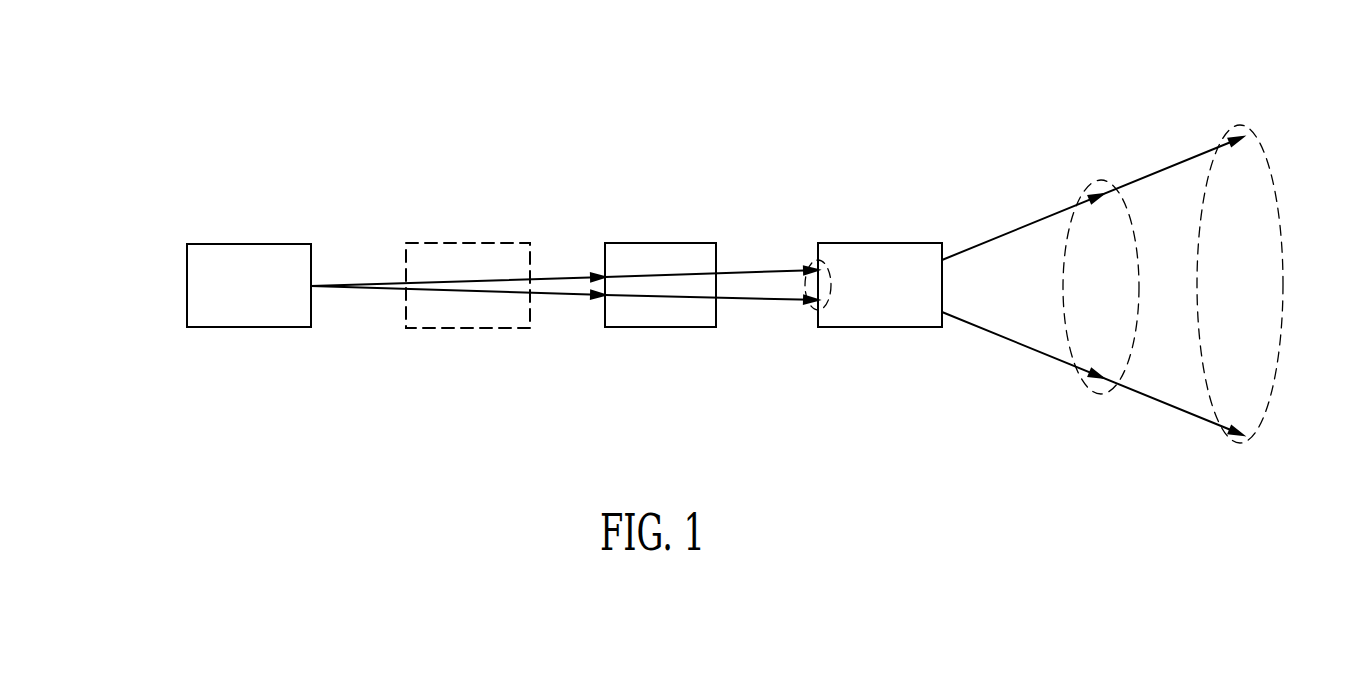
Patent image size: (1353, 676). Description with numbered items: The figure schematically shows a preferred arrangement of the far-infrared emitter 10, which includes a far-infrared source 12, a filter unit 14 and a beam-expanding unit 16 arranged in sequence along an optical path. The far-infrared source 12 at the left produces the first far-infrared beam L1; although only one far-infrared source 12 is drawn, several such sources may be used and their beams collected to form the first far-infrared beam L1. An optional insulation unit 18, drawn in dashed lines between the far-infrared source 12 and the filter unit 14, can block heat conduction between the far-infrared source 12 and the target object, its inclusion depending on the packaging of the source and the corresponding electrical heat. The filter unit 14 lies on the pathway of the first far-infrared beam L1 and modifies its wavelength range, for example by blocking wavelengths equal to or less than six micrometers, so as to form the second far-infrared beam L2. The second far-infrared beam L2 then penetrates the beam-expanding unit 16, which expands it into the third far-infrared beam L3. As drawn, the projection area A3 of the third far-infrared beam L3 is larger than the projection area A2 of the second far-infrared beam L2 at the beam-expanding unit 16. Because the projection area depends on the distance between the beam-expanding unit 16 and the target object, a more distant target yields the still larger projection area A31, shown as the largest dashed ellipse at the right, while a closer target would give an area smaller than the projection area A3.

The far-infrared emitter 10 is at (140, 113).
The far-infrared source 12 is at (210, 243).
The filter unit 14 is at (628, 243).
The beam-expanding unit 16 is at (841, 242).
The insulation unit 18 is at (428, 242).
The first far-infrared beam L1 is at (358, 289).
The second far-infrared beam L2 is at (752, 289).
The third far-infrared beam L3 is at (1028, 335).
The projection area of the second far-infrared beam A2 is at (827, 287).
The projection area of the third far-infrared beam A3 is at (1127, 288).
The larger projection area A31 is at (1268, 288).